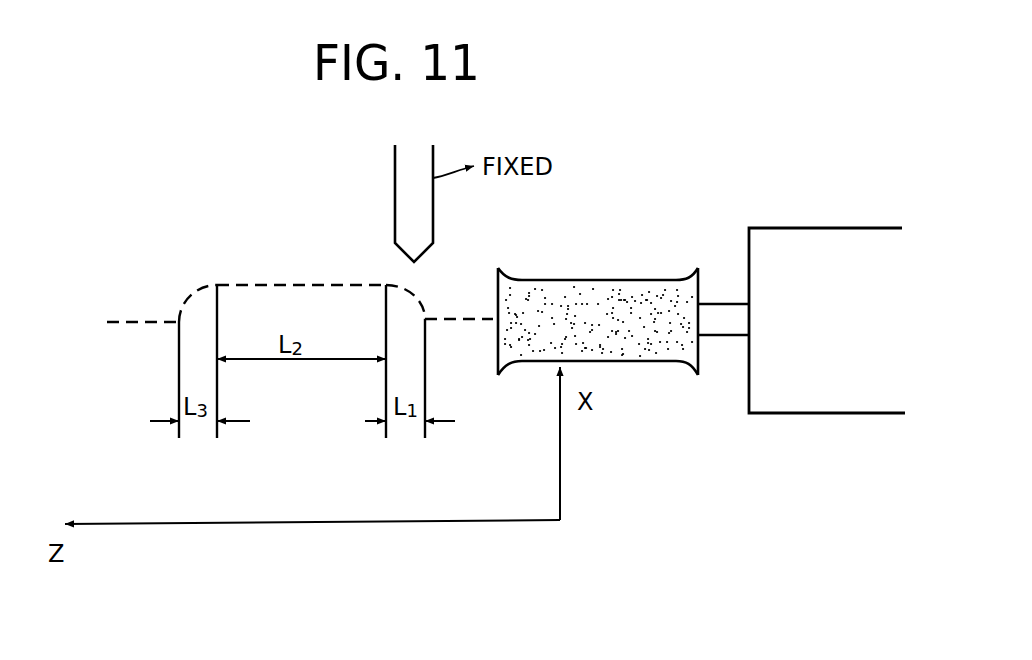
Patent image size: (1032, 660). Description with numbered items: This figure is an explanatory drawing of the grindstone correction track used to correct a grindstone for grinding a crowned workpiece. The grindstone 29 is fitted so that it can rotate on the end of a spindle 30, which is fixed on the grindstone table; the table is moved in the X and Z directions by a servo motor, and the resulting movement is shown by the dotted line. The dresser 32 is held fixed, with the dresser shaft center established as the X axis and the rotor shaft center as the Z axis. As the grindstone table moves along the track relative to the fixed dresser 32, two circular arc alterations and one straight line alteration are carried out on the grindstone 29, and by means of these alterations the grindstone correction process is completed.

The grindstone 29 is at (589, 280).
The spindle 30 is at (792, 228).
The dresser 32 is at (394, 164).